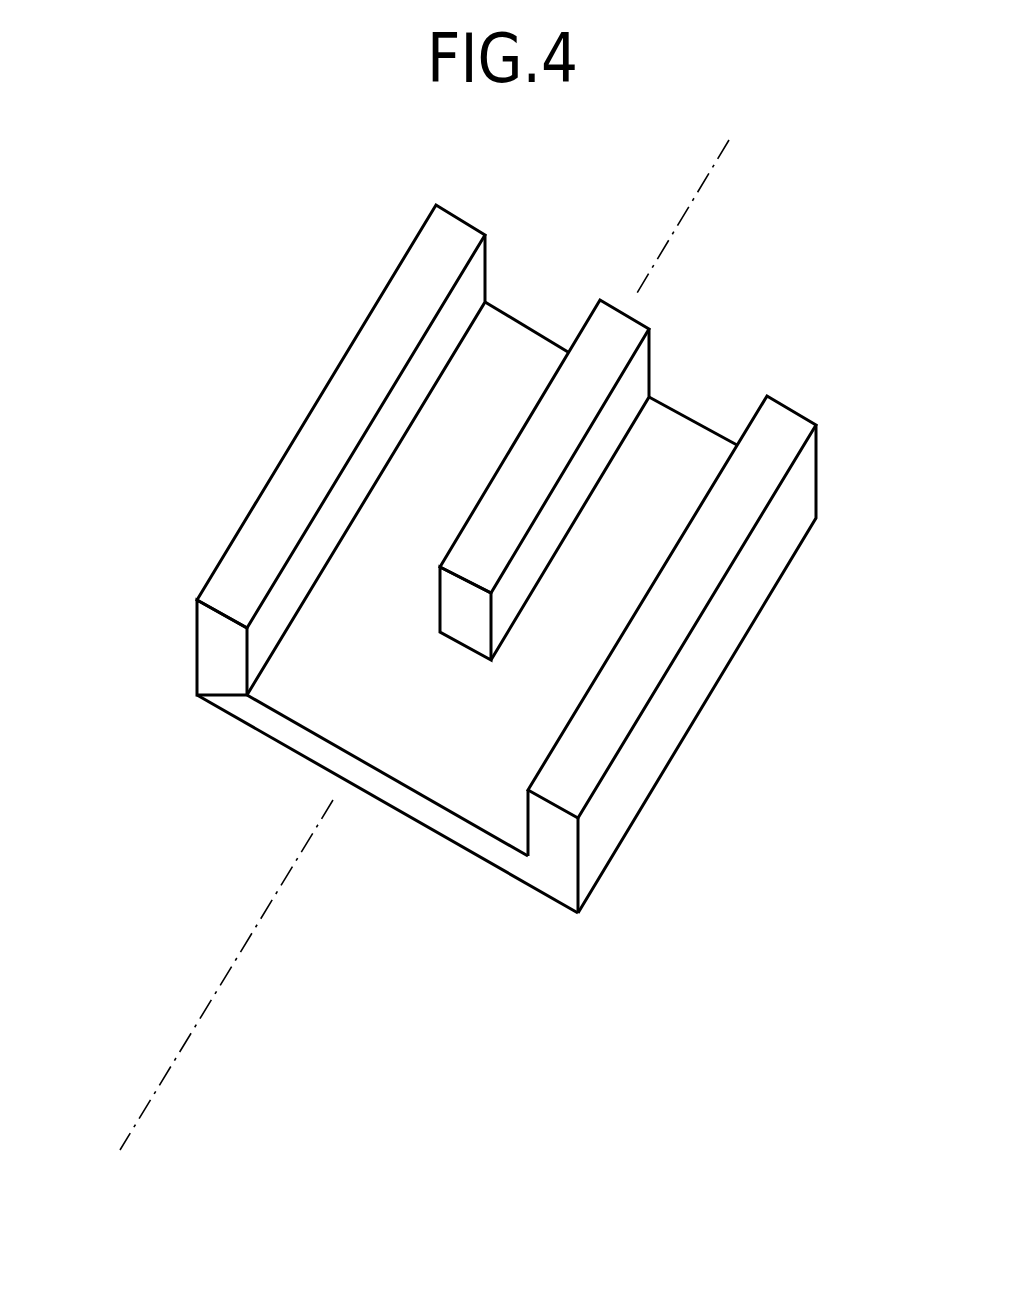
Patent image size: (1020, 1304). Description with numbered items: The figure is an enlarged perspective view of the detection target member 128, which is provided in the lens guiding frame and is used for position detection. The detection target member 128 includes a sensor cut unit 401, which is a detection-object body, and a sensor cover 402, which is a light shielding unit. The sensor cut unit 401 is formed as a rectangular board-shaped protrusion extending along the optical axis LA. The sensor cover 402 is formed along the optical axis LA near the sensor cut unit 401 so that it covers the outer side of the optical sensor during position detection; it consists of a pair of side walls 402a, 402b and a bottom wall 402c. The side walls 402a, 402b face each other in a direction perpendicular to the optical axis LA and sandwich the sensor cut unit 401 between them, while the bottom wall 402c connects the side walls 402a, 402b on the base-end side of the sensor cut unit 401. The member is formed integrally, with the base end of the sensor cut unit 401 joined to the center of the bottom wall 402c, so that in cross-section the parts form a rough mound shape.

The detection target member 128 is at (343, 237).
The sensor cut unit 401 is at (612, 333).
The sensor cover 402 is at (468, 833).
The side wall 402a is at (297, 465).
The side wall 402b is at (603, 738).
The bottom wall 402c is at (308, 700).
The optical axis LA is at (702, 188).